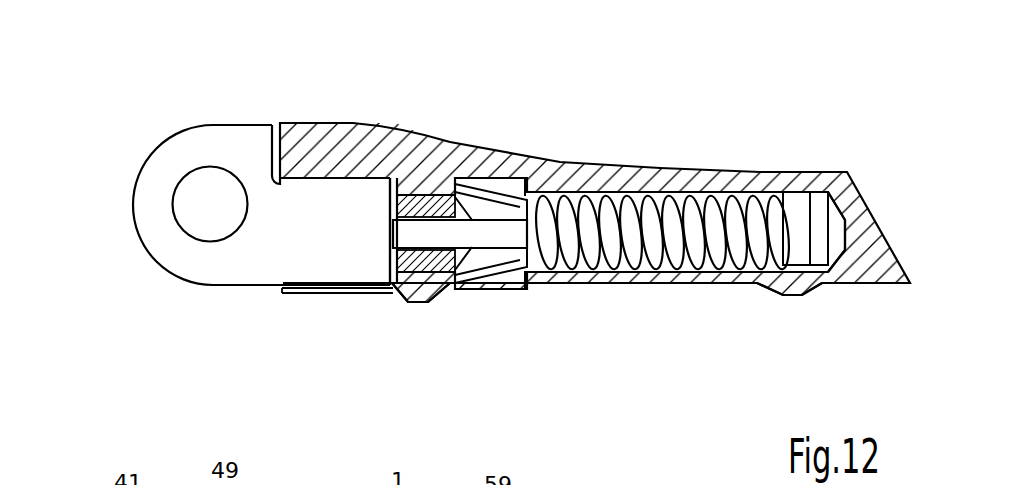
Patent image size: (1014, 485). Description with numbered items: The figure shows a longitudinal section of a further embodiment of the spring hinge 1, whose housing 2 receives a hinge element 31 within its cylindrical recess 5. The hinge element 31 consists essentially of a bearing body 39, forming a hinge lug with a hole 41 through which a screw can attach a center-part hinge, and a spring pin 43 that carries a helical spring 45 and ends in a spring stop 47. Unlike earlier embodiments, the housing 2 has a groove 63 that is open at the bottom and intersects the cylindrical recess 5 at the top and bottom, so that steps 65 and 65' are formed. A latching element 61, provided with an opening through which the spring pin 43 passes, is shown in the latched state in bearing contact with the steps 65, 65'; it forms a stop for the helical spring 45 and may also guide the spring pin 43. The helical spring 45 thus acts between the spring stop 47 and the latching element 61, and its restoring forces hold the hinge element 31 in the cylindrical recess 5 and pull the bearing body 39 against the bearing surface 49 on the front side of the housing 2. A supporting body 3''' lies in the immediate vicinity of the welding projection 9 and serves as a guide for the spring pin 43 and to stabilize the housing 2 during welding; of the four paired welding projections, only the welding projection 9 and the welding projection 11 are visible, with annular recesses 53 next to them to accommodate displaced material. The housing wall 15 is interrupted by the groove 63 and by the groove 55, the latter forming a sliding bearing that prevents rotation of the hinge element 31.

The spring hinge 1 is at (332, 110).
The housing 2 is at (470, 158).
The supporting body 3''' is at (372, 287).
The cylindrical recess 5 is at (818, 203).
The welding projection 9 is at (408, 304).
The welding projection 11 is at (805, 296).
The housing wall 15 is at (630, 275).
The hinge element 31 is at (156, 288).
The bearing body 39 is at (155, 202).
The hole 41 is at (202, 197).
The spring pin 43 is at (440, 235).
The helical spring 45 is at (664, 212).
The spring stop 47 is at (795, 230).
The bearing surface 49 is at (270, 150).
The annular recesses 53 is at (398, 288).
The groove 55 is at (312, 290).
The latching element 61 is at (498, 198).
The groove 63 is at (517, 275).
The step 65 is at (484, 121).
The step 65' is at (466, 340).